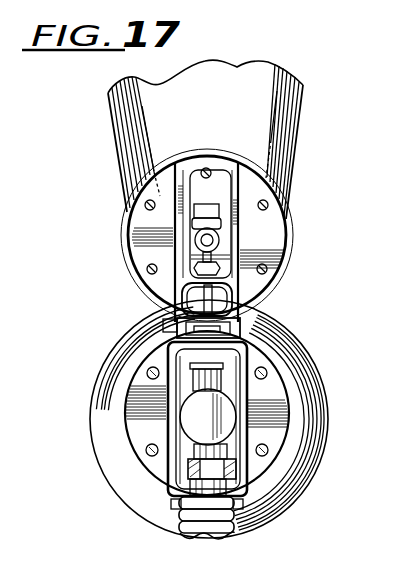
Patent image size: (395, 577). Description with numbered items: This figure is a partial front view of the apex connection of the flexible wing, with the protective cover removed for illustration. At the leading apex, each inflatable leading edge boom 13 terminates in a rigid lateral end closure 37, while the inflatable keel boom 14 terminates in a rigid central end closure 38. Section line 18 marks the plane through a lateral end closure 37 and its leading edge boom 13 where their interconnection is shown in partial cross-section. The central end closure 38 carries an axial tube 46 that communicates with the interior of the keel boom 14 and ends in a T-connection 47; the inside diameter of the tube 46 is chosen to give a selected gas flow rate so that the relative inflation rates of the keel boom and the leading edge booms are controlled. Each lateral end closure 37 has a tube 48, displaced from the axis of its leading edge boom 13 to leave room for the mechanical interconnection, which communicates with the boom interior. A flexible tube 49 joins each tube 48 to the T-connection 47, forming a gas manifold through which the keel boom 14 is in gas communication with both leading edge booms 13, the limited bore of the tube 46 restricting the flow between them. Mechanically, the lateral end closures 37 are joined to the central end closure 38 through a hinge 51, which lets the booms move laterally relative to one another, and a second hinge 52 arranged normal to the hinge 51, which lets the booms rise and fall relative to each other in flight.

The leading edge boom 13 is at (287, 146).
The keel boom 14 is at (297, 373).
The section line 18- 18 is at (253, 232).
The lateral end closure 37 is at (288, 220).
The central end closure 38 is at (240, 294).
The axial tube 46 is at (195, 425).
The T-connection 47 is at (222, 378).
The tube 48 is at (219, 196).
The flexible tube 49 is at (230, 541).
The hinge 51 is at (240, 330).
The second hinge 52 is at (183, 300).